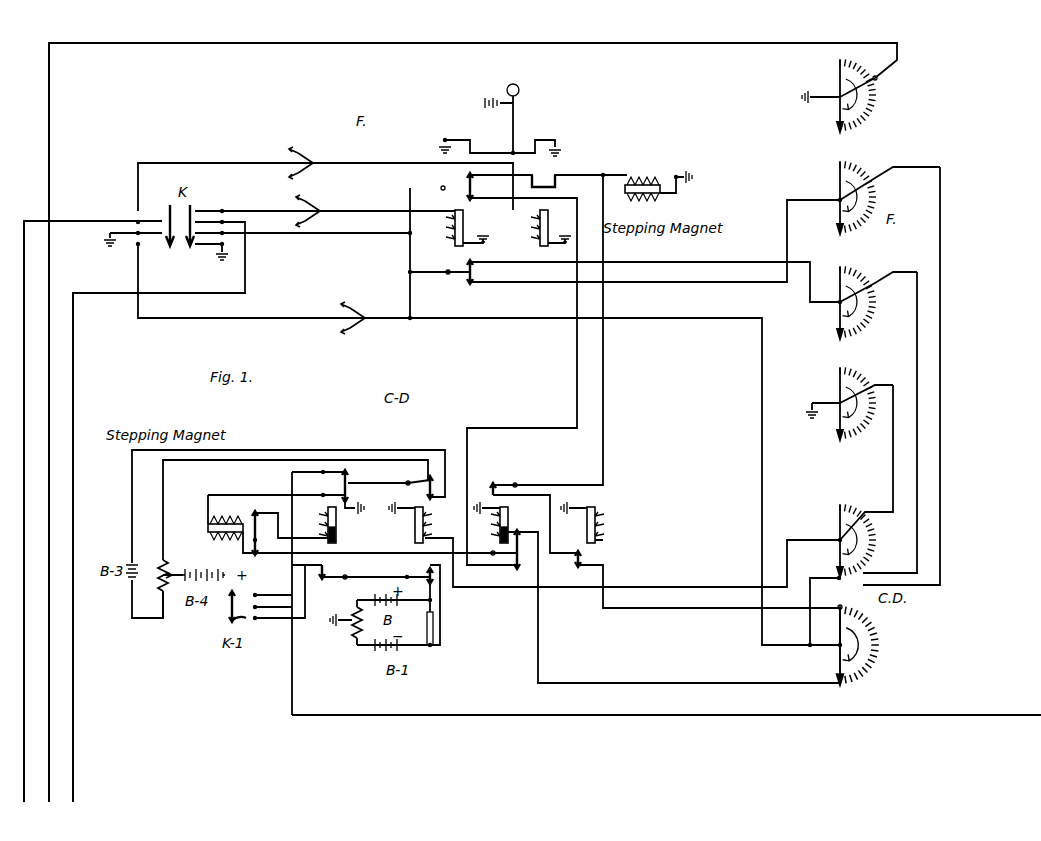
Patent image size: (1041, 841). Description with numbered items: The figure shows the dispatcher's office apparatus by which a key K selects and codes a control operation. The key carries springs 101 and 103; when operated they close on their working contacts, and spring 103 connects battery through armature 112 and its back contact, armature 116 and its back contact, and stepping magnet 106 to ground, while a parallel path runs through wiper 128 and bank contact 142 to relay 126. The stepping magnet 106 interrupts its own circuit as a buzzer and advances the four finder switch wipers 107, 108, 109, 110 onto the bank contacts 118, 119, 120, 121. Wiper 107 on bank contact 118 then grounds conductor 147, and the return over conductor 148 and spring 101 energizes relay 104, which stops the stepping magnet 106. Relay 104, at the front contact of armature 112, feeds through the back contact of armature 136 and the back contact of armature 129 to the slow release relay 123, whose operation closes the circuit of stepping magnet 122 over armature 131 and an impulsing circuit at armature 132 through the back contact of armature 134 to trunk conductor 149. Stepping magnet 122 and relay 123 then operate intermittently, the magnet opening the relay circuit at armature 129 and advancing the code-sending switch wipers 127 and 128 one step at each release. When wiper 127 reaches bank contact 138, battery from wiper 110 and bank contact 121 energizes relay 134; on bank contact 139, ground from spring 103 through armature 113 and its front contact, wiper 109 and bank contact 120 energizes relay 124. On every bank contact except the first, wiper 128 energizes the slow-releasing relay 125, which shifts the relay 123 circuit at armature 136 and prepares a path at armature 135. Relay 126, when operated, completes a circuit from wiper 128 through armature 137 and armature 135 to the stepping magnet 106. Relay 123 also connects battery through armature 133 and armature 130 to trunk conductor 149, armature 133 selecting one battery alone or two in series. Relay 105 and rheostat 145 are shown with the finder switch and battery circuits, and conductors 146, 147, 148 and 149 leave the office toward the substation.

The spring 101 is at (200, 250).
The spring 103 is at (175, 252).
The relay 104 is at (446, 233).
The relay 105 is at (531, 233).
The stepping magnet 106 is at (645, 182).
The wiper 107 is at (838, 77).
The wiper 108 is at (838, 190).
The wiper 109 is at (838, 316).
The wiper 110 is at (838, 387).
The armature 112 is at (457, 186).
The armature 113 is at (466, 275).
The armature 116 is at (545, 185).
The bank contact 118 is at (878, 79).
The bank contact 119 is at (878, 183).
The bank contact 120 is at (876, 283).
The bank contact 121 is at (876, 385).
The stepping magnet 122 is at (216, 534).
The slow release relay 123 is at (327, 521).
The relay 124 is at (413, 535).
The slow-releasing relay 125 is at (510, 522).
The relay 126 is at (598, 524).
The wiper 127 is at (838, 530).
The wiper 128 is at (838, 667).
The armature 129 is at (258, 514).
The armature 130 is at (324, 471).
The armature 131 is at (330, 493).
The armature 132 is at (326, 569).
The armature 133 is at (408, 483).
The relay 134 is at (418, 577).
The armature 135 is at (502, 486).
The armature 136 is at (514, 564).
The armature 137 is at (594, 563).
The bank contact 138 is at (865, 512).
The bank contact 139 is at (866, 573).
The bank contact 142 is at (838, 607).
The rheostat 145 is at (352, 632).
The conductor 146 is at (24, 755).
The conductor 147 is at (49, 770).
The conductor 148 is at (73, 776).
The trunk conductor 149 is at (938, 712).